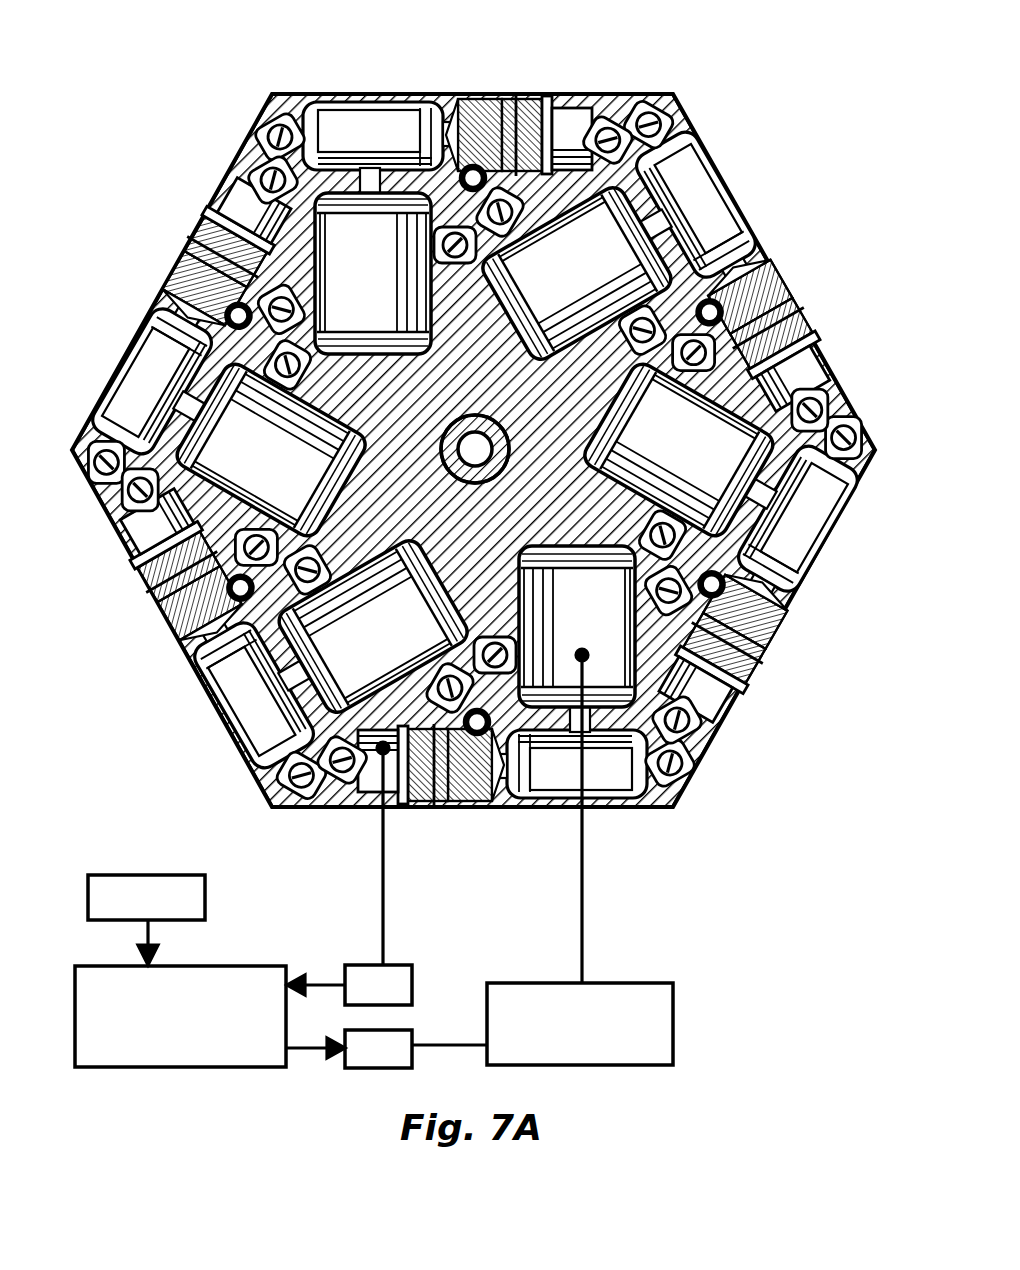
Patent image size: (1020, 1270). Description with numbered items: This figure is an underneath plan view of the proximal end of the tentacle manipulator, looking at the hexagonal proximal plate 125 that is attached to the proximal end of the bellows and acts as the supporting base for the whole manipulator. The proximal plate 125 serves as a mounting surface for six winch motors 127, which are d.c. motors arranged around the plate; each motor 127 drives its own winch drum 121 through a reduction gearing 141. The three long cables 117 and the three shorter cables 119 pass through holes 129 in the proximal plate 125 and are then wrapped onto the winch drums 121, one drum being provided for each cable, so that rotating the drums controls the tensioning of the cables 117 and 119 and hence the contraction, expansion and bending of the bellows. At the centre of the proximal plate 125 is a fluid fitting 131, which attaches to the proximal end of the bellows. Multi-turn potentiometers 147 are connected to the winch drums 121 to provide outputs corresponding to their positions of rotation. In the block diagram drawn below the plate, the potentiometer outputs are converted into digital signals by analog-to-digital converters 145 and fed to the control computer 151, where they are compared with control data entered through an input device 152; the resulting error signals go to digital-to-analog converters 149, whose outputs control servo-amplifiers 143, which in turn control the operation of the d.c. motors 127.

The cables 117 is at (468, 97).
The cables 119 is at (190, 275).
The winch drums 121 is at (492, 97).
The proximal plate 125 is at (538, 531).
The winch motors 127 is at (386, 274).
The holes 129 is at (465, 717).
The fluid fitting 131 is at (480, 442).
The reduction gearing 141 is at (370, 130).
The servo-amplifiers 143 is at (655, 995).
The analog-to-digital converters 145 is at (395, 975).
The multi-turn potentiometers 147 is at (572, 105).
The digital-to-analog converters 149 is at (400, 1032).
The control computer 151 is at (280, 985).
The input device 152 is at (190, 878).